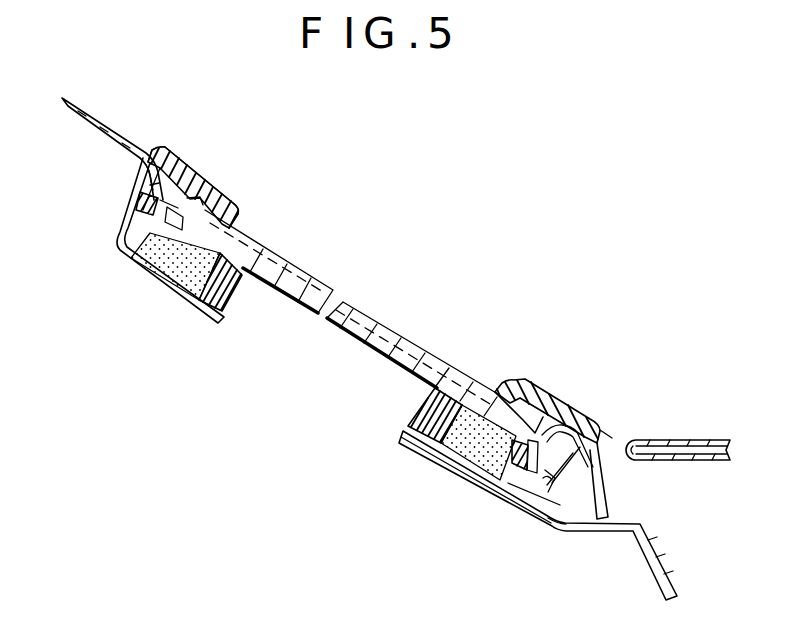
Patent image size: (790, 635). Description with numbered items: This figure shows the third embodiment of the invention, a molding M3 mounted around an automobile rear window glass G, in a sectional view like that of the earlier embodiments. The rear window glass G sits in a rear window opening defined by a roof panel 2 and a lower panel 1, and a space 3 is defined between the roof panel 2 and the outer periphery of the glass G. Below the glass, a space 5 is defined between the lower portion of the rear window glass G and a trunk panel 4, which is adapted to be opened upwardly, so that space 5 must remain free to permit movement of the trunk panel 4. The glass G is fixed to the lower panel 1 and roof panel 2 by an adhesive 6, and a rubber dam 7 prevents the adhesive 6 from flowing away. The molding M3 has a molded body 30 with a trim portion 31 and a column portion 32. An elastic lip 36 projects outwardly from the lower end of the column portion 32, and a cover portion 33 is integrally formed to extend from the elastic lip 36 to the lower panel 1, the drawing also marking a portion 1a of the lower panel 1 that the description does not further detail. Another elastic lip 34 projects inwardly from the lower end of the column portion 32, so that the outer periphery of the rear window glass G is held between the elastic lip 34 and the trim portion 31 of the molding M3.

The lower panel 1 is at (652, 574).
The bent portion of base plate 1a is at (567, 512).
The roof panel 2 is at (76, 116).
The space 3 is at (142, 172).
The trunk panel 4 is at (678, 440).
The space 5 is at (612, 452).
The adhesive 6 is at (185, 280).
The rubber dam 7 is at (227, 292).
The molded body 30 is at (241, 203).
The trim portion 31 is at (182, 170).
The column portion 32 is at (140, 184).
The cover portion 33 is at (598, 492).
The elastic lip 34 is at (137, 272).
The elastic lip 36 is at (140, 212).
The rear window glass G is at (263, 257).
The molding M3 is at (223, 163).